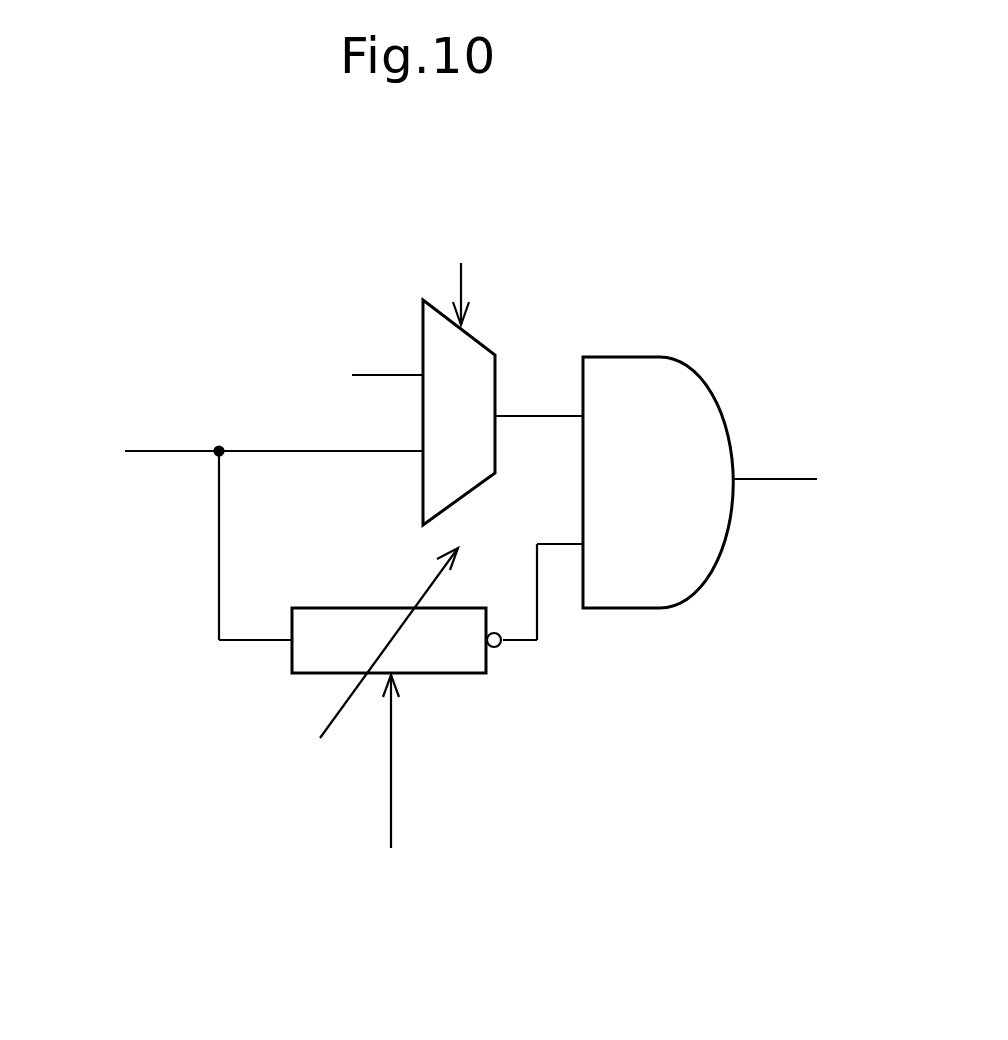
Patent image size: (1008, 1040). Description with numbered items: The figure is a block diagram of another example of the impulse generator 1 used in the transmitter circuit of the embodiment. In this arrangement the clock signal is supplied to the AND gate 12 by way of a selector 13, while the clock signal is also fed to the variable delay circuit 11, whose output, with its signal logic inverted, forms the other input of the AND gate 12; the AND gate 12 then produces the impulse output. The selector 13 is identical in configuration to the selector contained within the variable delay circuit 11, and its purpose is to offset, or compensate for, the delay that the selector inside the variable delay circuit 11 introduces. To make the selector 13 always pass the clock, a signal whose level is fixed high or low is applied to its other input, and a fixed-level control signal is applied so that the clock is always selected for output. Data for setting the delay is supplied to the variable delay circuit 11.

The impulse generator 1 is at (482, 164).
The variable delay circuit 11 is at (292, 663).
The AND gate 12 is at (705, 583).
The selector 13 is at (496, 453).